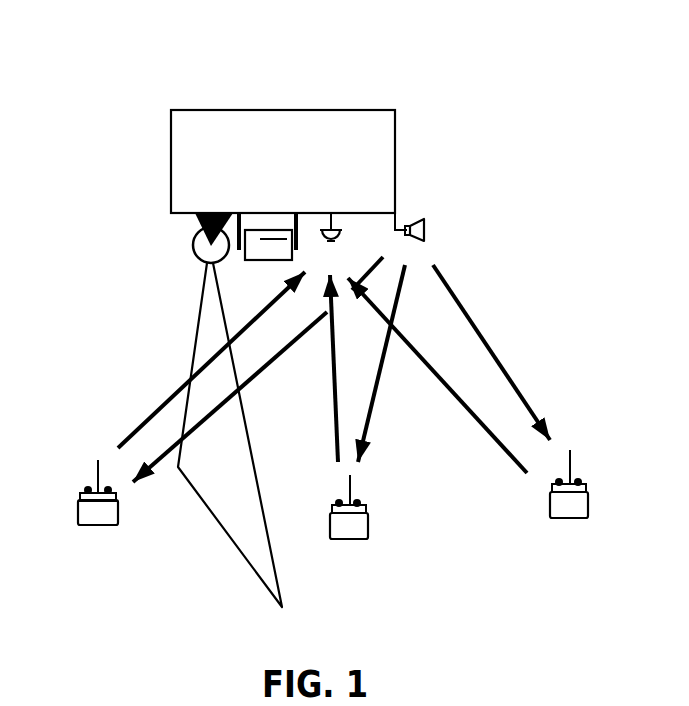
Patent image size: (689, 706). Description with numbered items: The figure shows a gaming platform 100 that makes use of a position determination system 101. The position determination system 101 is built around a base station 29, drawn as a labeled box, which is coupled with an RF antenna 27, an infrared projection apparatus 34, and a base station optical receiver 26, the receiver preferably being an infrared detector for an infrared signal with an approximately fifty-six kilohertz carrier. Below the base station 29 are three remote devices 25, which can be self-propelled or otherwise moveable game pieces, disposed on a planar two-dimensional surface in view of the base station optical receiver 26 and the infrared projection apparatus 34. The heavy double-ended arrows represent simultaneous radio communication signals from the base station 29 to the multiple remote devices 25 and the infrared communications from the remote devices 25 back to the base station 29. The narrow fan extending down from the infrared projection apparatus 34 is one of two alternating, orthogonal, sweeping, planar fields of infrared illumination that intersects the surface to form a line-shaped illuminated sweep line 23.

The gaming platform 100 is at (565, 80).
The position determination system 101 is at (544, 24).
The base station 29 is at (327, 106).
The infrared projection apparatus 34 is at (198, 217).
The illuminated sweep line 23 is at (233, 548).
The base station optical receiver 26 is at (340, 233).
The RF antenna 27 is at (407, 222).
The remote devices 25 is at (68, 505).